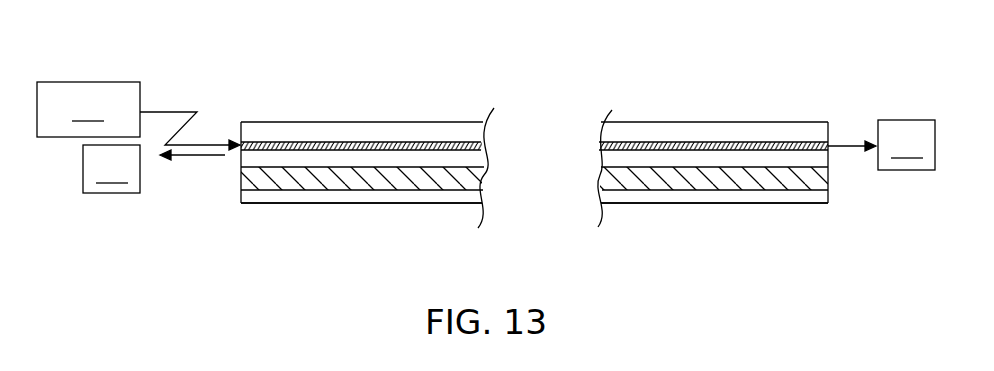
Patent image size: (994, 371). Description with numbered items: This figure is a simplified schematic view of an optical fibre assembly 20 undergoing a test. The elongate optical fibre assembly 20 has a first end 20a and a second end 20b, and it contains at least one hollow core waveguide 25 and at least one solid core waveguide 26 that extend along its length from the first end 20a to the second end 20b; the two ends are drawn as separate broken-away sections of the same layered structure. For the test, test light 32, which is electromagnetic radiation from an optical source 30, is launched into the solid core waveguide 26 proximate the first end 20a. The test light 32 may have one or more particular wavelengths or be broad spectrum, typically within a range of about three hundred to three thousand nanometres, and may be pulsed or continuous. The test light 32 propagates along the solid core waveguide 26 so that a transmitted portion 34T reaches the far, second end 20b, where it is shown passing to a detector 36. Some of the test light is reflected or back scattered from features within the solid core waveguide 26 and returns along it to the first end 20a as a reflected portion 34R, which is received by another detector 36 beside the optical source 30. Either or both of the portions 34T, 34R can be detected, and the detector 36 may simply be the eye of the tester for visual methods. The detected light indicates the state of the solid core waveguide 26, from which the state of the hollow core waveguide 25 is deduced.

The optical fibre assembly 20 is at (328, 93).
The first end 20a is at (293, 205).
The second end 20b is at (705, 205).
The hollow core waveguide 25 is at (382, 190).
The solid core waveguide 26 is at (398, 142).
The optical source 30 is at (88, 109).
The test light 32 is at (163, 110).
The reflected portion 34R is at (190, 158).
The transmitted portion 34T is at (847, 148).
The detector 36 is at (509, 156).